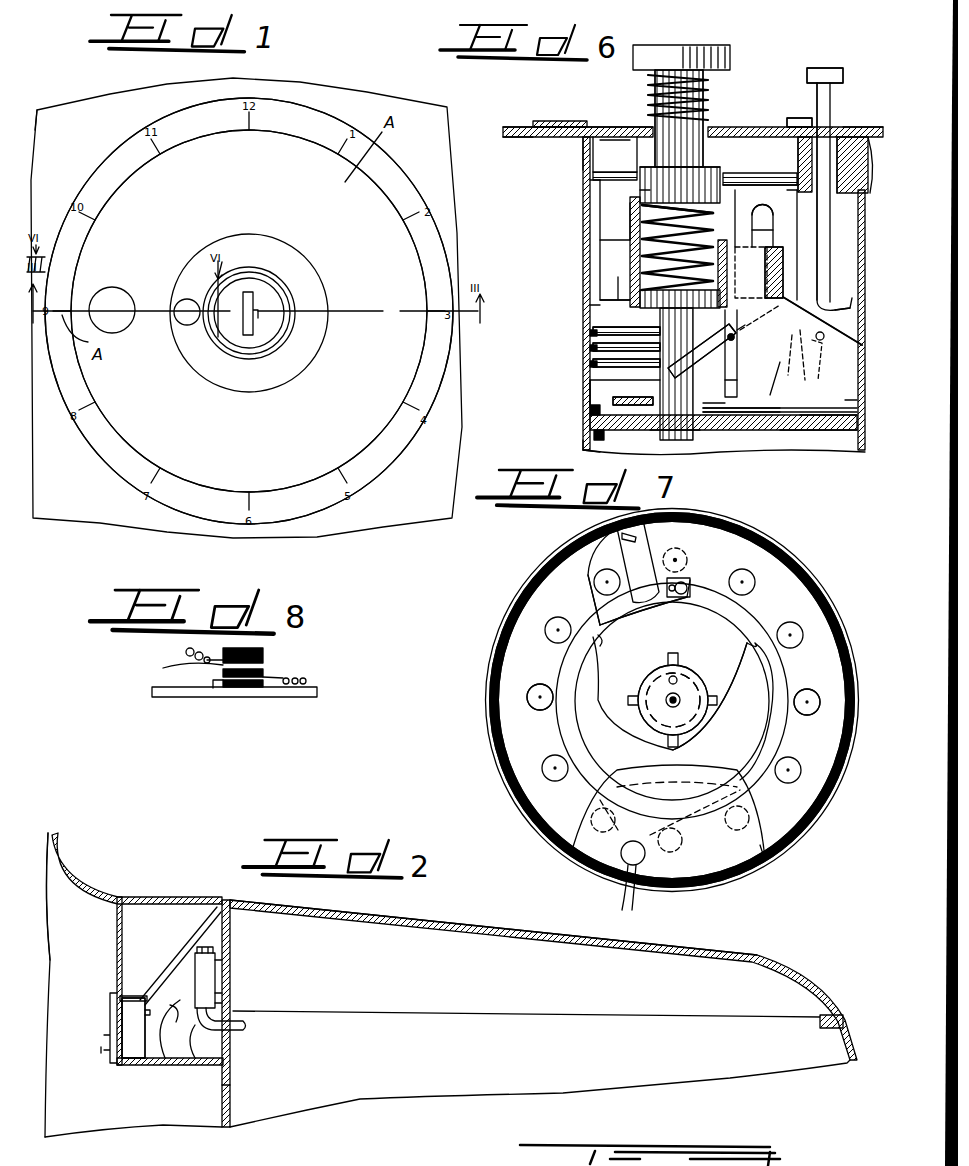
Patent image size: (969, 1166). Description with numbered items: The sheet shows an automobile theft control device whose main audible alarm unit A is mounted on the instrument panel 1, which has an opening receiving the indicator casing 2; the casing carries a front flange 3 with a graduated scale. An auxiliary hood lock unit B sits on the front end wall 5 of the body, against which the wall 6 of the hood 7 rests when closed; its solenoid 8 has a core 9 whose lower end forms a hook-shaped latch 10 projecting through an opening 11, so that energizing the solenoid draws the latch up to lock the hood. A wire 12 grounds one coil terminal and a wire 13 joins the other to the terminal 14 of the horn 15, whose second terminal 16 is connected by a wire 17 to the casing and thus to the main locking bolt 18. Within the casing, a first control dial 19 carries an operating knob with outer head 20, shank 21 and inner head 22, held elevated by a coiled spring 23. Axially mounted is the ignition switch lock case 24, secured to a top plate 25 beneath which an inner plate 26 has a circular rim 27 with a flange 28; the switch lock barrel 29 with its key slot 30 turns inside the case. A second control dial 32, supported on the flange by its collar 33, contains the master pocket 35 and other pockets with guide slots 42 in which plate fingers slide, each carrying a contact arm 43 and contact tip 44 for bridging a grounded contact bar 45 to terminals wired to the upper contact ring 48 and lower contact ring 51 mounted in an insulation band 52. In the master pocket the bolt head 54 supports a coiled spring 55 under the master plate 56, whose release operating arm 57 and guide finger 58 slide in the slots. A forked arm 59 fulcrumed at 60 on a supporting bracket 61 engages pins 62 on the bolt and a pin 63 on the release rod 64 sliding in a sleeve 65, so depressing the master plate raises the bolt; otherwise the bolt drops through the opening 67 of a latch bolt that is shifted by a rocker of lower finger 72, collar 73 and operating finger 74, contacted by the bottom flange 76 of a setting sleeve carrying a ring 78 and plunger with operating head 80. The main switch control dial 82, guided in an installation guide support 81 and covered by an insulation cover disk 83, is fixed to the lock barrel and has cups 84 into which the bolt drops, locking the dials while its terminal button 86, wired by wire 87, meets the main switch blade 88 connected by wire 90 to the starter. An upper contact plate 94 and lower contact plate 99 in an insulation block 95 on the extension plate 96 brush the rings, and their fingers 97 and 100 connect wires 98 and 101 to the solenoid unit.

In FIG. 1, the instrument panel 1 is at (83, 116).
In FIG. 6, the instrument panel 1 is at (543, 140).
In FIG. 2, the instrument panel 1 is at (117, 935).
In FIG. 6, the indicator casing 2 is at (582, 443).
In FIG. 7, the indicator casing 2 is at (524, 588).
In FIG. 2, the indicator casing 2 is at (135, 998).
In FIG. 1, the front flange 3 is at (385, 450).
In FIG. 6, the front flange 3 is at (567, 143).
In FIG. 2, the front end wall 5 is at (232, 1088).
In FIG. 2, the hood wall 6 is at (232, 957).
In FIG. 2, the automobile hood 7 is at (547, 942).
In FIG. 2, the solenoid 8 is at (215, 978).
In FIG. 2, the solenoid core 9 is at (217, 1085).
In FIG. 2, the hook-shaped latch 10 is at (243, 1032).
In FIG. 2, the opening 11 is at (232, 1010).
In FIG. 2, the wire 12 is at (195, 1067).
In FIG. 7, the wire 13 is at (783, 713).
In FIG. 2, the wire 13 is at (169, 1018).
In FIG. 7, the terminal 14 is at (757, 647).
In FIG. 7, the horn 15 is at (716, 696).
In FIG. 7, the second terminal 16 is at (592, 672).
In FIG. 7, the wire 17 is at (611, 642).
In FIG. 6, the main locking bolt 18 is at (690, 412).
In FIG. 7, the main locking bolt 18 is at (686, 553).
In FIG. 1, the first control dial 19 is at (249, 311).
In FIG. 6, the first control dial 19 is at (634, 125).
In FIG. 1, the outer head 20 is at (118, 303).
In FIG. 6, the outer head 20 is at (716, 65).
In FIG. 6, the shank 21 is at (708, 137).
In FIG. 6, the inner head 22 is at (650, 182).
In FIG. 6, the coiled spring 23 is at (705, 112).
In FIG. 1, the ignition switch lock case 24 is at (282, 293).
In FIG. 7, the ignition switch lock case 24 is at (655, 672).
In FIG. 1, the top plate 25 is at (285, 370).
In FIG. 6, the top plate 25 is at (798, 125).
In FIG. 6, the inner stationary plate 26 is at (859, 127).
In FIG. 6, the circular rim 27 is at (808, 174).
In FIG. 6, the flange 28 is at (797, 206).
In FIG. 1, the switch lock barrel 29 is at (267, 332).
In FIG. 7, the switch lock barrel 29 is at (655, 690).
In FIG. 1, the key slot 30 is at (258, 318).
In FIG. 6, the second control dial 32 is at (628, 193).
In FIG. 6, the collar 33 is at (798, 160).
In FIG. 6, the master pocket 35 is at (611, 252).
In FIG. 6, the guide slots 42 is at (762, 220).
In FIG. 6, the contact arm 43 is at (640, 232).
In FIG. 6, the contact tip 44 is at (612, 288).
In FIG. 6, the contact bar 45 is at (598, 328).
In FIG. 6, the upper contact ring 48 is at (598, 348).
In FIG. 6, the lower contact ring 51 is at (592, 368).
In FIG. 6, the insulation band 52 is at (592, 390).
In FIG. 6, the head 54 is at (592, 305).
In FIG. 6, the coiled spring 55 is at (643, 263).
In FIG. 6, the master plate 56 is at (650, 198).
In FIG. 6, the release operating arm 57 is at (747, 190).
In FIG. 6, the guide finger 58 is at (643, 193).
In FIG. 6, the forked arm 59 is at (735, 345).
In FIG. 6, the fulcrum 60 is at (738, 340).
In FIG. 6, the supporting bracket 61 is at (818, 442).
In FIG. 6, the pins 62 is at (670, 376).
In FIG. 6, the pin 63 is at (778, 315).
In FIG. 6, the release rod 64 is at (760, 240).
In FIG. 6, the sleeve 65 is at (787, 270).
In FIG. 6, the opening 67 is at (645, 432).
In FIG. 6, the lower finger 72 is at (780, 378).
In FIG. 6, the collar 73 is at (815, 336).
In FIG. 6, the operating finger 74 is at (820, 344).
In FIG. 6, the bottom flange 76 is at (848, 318).
In FIG. 6, the ring 78 is at (827, 246).
In FIG. 1, the operating head 80 is at (185, 318).
In FIG. 6, the operating head 80 is at (833, 62).
In FIG. 6, the installation guide support 81 is at (592, 413).
In FIG. 7, the installation guide support 81 is at (782, 852).
In FIG. 6, the main switch control dial 82 is at (832, 428).
In FIG. 7, the main switch control dial 82 is at (800, 798).
In FIG. 6, the insulation cover disk 83 is at (852, 418).
In FIG. 6, the cups 84 is at (741, 432).
In FIG. 7, the cups 84 is at (538, 690).
In FIG. 6, the terminal button 86 is at (741, 434).
In FIG. 7, the terminal button 86 is at (694, 596).
In FIG. 7, the wire 87 is at (638, 621).
In FIG. 7, the main switch blade 88 is at (638, 552).
In FIG. 7, the wire 90 is at (588, 611).
In FIG. 8, the upper contact plate 94 is at (263, 660).
In FIG. 8, the insulation block 95 is at (257, 648).
In FIG. 8, the extension plate 96 is at (174, 692).
In FIG. 8, the finger 97 is at (181, 670).
In FIG. 8, the wire 98 is at (185, 652).
In FIG. 8, the lower contact plate 99 is at (216, 688).
In FIG. 8, the finger 100 is at (276, 682).
In FIG. 8, the wire 101 is at (313, 679).
In FIG. 2, the main audible alarm unit A is at (133, 1045).
In FIG. 2, the auxiliary hood lock unit B is at (200, 945).